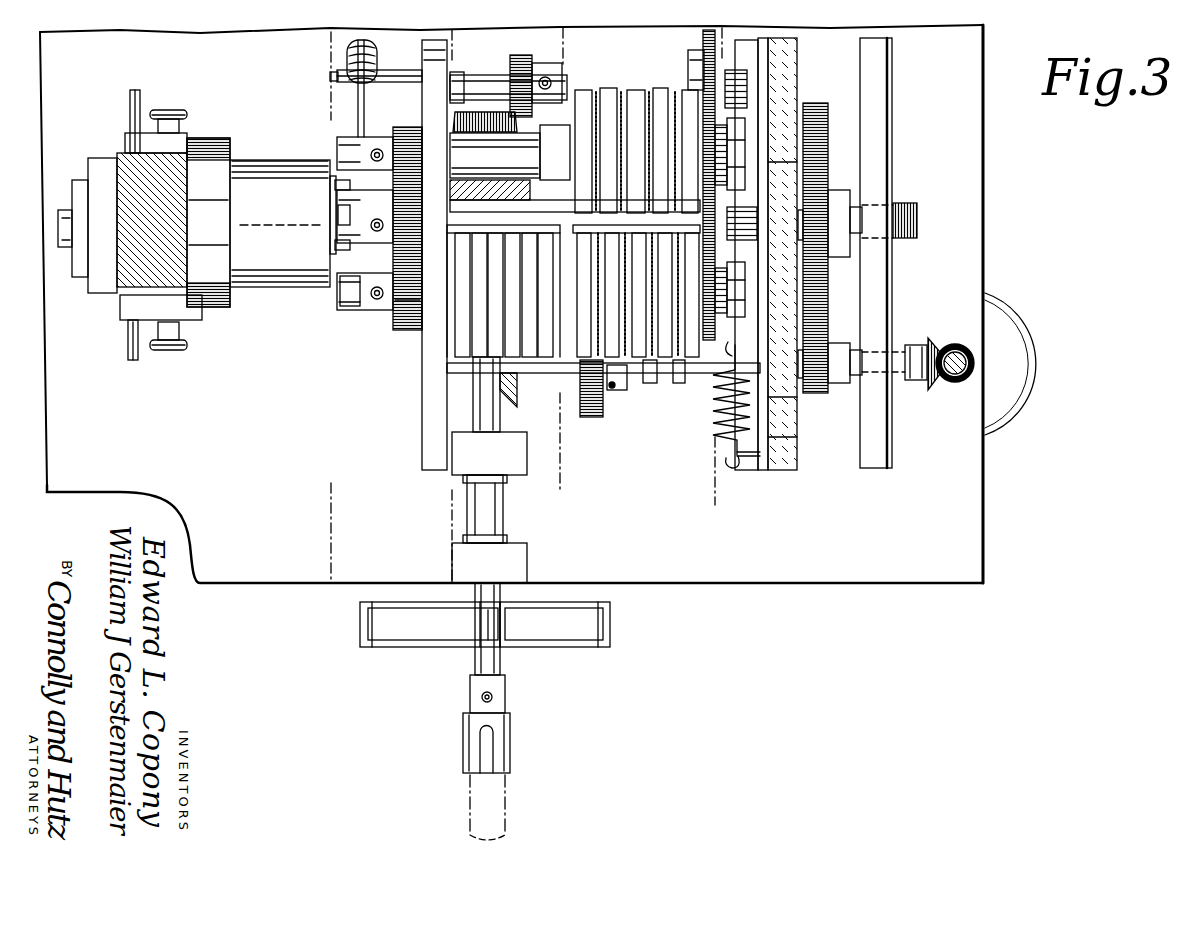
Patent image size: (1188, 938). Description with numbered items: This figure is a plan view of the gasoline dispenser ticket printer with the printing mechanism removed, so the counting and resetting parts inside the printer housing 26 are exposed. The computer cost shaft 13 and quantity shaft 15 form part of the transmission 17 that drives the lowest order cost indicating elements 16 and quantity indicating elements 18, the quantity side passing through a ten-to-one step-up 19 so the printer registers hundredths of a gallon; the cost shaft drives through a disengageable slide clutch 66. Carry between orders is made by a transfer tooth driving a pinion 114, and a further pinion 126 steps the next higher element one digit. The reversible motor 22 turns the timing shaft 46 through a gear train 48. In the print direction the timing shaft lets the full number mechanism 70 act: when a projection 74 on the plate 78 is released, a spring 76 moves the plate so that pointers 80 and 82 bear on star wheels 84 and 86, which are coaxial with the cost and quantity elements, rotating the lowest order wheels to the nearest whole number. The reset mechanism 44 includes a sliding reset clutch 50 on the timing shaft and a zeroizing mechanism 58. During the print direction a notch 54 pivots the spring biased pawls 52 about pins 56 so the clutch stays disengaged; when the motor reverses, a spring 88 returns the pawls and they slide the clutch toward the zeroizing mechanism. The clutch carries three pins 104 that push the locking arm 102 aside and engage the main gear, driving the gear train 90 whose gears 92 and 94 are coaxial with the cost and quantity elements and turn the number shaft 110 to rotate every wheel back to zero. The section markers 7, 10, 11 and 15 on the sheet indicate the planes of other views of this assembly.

The section line 7 is at (776, 15).
The section line 10 is at (626, 16).
The section line 11 is at (510, 16).
The computer cost shaft 13 is at (500, 660).
The computer quantity shaft 15 is at (385, 16).
The cost indicating elements 16 is at (640, 100).
The transmission arrangement 17 is at (445, 652).
The quantity indicating elements 18 is at (572, 366).
The ten-to-one step-up 19 is at (428, 368).
The reversible motor 22 is at (1010, 338).
The printer housing 26 is at (873, 470).
The reset mechanism 44 is at (303, 158).
The timing shaft 46 is at (75, 245).
The gear train 48 is at (830, 312).
The reset clutch 50 is at (282, 272).
The pawls 52 is at (185, 140).
The notch 54 is at (193, 292).
The pins 56 is at (168, 110).
The zeroizing mechanism 58 is at (362, 316).
The disengageable clutch 66 is at (700, 55).
The full number mechanism 70 is at (760, 46).
The projection 74 is at (742, 205).
The spring 76 is at (790, 420).
The plate 78 is at (764, 342).
The pointer 80 is at (745, 82).
The pointer 82 is at (758, 232).
The star wheel 84 is at (745, 122).
The star wheel 86 is at (750, 270).
The spring 88 is at (132, 115).
The gear train 90 is at (423, 242).
The gear 92 is at (403, 137).
The gear 94 is at (404, 316).
The locking arm 102 is at (345, 84).
The pins 104 is at (335, 185).
The number shaft 110 is at (535, 135).
The pinion 114 is at (680, 386).
The pinion 126 is at (650, 392).